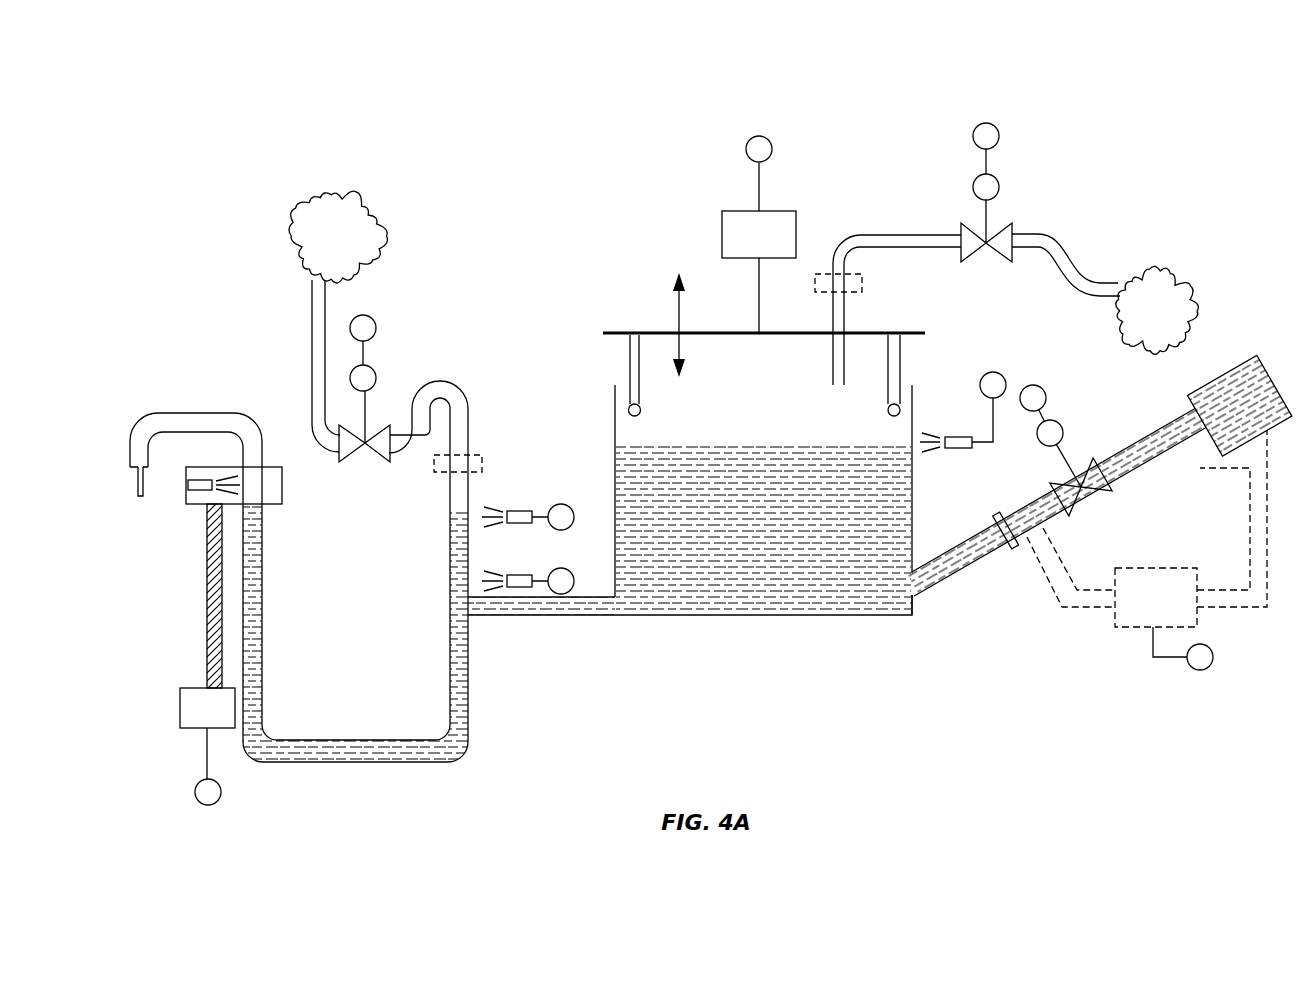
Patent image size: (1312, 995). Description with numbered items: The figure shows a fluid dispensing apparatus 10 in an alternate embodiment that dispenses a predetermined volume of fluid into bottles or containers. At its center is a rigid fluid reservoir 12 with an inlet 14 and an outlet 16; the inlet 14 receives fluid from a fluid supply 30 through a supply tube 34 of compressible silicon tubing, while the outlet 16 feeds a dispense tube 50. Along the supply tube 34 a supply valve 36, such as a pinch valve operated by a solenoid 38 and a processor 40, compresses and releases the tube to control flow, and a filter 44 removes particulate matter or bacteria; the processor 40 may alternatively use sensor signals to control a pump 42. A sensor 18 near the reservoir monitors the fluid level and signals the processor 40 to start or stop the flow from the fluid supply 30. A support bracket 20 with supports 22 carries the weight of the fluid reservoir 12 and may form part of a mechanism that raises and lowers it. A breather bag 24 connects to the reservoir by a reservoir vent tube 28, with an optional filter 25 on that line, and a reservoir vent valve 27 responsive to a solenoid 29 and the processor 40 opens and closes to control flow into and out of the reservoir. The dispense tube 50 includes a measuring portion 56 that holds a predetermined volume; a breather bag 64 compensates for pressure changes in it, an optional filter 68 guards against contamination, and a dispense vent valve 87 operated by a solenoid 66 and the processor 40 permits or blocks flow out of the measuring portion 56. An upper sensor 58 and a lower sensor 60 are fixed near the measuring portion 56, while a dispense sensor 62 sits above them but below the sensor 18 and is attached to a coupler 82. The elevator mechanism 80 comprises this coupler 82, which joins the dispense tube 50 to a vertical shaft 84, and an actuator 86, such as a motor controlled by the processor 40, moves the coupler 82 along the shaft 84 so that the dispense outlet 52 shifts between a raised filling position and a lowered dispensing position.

The fluid dispensing apparatus 10 is at (1152, 98).
The fluid reservoir 12 is at (722, 615).
The inlet 14 is at (918, 588).
The outlet 16 is at (614, 600).
The sensor 18 is at (962, 448).
The support bracket 20 is at (620, 333).
The supports 22 is at (630, 377).
The breather bag 24 is at (1150, 290).
The filter 25 is at (862, 283).
The reservoir vent valve 27 is at (1010, 228).
The reservoir vent tube 28 is at (845, 317).
The solenoid 29 is at (1000, 183).
The fluid supply 30 is at (1243, 362).
The supply tube 34 is at (1172, 455).
The supply valve 36 is at (1095, 465).
The solenoid 38 is at (1060, 422).
The processor 40 is at (216, 802).
The pump 42 is at (1146, 568).
The filter 44 is at (1017, 552).
The dispense tube 50 is at (192, 371).
The dispense outlet 52 is at (138, 490).
The measuring portion 56 is at (470, 442).
The upper sensor 58 is at (518, 511).
The lower sensor 60 is at (518, 575).
The dispense sensor 62 is at (187, 490).
The breather bag 64 is at (345, 220).
The solenoid 66 is at (375, 378).
The filter 68 is at (483, 463).
The elevator mechanism 80 is at (302, 147).
The coupler 82 is at (283, 485).
The vertical shaft 84 is at (207, 585).
The actuator 86 is at (180, 703).
The dispense vent valve 87 is at (392, 428).